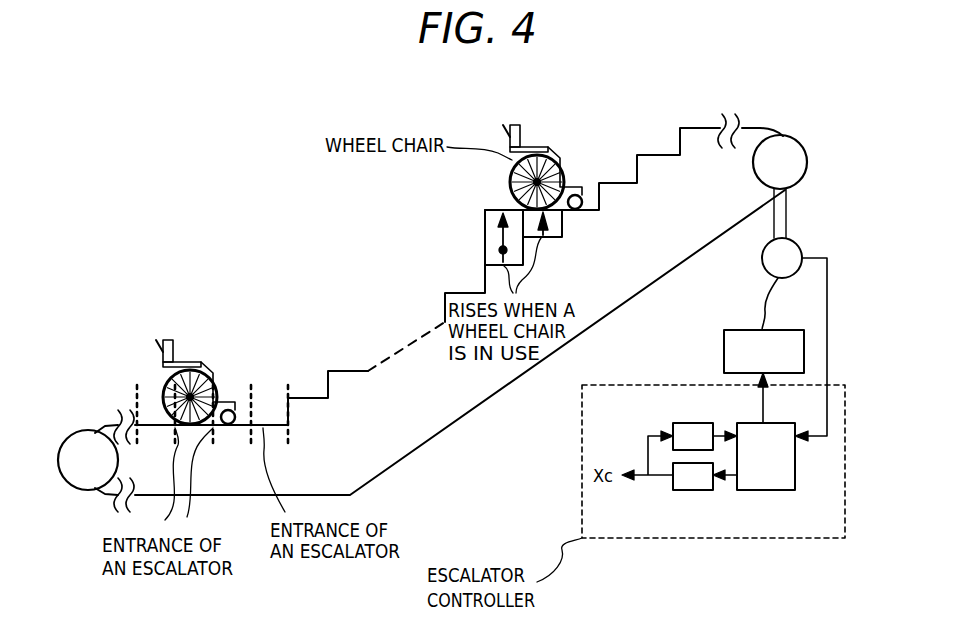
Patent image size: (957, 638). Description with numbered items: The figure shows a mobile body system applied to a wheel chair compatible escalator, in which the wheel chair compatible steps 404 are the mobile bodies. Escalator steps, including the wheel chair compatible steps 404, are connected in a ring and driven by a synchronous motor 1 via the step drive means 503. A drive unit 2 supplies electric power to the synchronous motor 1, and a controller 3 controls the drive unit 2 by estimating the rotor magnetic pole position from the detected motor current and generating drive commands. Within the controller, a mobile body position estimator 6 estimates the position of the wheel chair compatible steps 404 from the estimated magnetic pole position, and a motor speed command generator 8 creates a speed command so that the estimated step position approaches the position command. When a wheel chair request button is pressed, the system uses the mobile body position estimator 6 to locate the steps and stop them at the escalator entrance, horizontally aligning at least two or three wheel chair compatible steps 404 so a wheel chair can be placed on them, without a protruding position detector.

The step drive means 503 is at (780, 146).
The synchronous motor 1 is at (803, 244).
The drive unit 2 is at (724, 345).
The wheel chair compatible steps 404 is at (523, 231).
The controller 3 is at (765, 490).
The motor speed command generator 8 is at (690, 423).
The mobile body position estimator 6 is at (690, 490).